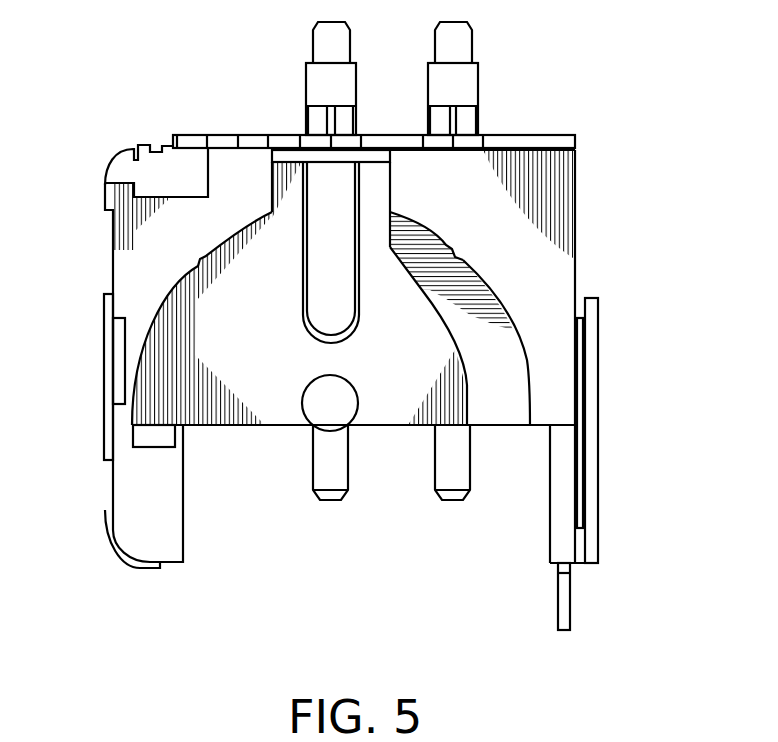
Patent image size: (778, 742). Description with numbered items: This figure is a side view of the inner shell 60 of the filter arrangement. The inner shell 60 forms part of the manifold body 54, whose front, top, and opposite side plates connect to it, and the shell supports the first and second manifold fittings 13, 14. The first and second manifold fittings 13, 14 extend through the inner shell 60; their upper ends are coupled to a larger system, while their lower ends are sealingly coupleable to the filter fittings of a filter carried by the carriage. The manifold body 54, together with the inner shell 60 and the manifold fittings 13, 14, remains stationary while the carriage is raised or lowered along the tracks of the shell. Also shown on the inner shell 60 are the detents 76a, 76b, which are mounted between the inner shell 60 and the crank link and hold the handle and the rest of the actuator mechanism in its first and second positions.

The manifold body 54 is at (192, 139).
The inner shell 60 is at (563, 176).
The detent 76a is at (465, 257).
The detent 76b is at (202, 257).
The first manifold fitting 13 is at (440, 467).
The second manifold fitting 14 is at (318, 470).